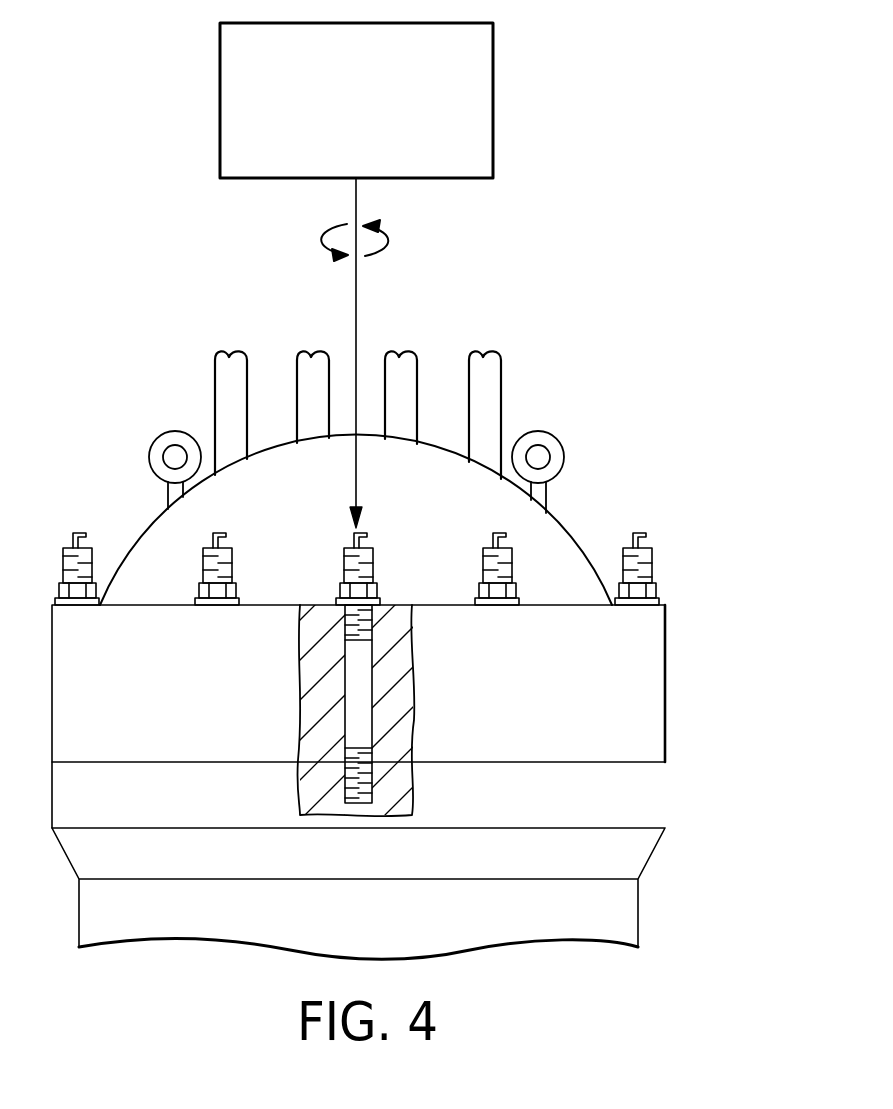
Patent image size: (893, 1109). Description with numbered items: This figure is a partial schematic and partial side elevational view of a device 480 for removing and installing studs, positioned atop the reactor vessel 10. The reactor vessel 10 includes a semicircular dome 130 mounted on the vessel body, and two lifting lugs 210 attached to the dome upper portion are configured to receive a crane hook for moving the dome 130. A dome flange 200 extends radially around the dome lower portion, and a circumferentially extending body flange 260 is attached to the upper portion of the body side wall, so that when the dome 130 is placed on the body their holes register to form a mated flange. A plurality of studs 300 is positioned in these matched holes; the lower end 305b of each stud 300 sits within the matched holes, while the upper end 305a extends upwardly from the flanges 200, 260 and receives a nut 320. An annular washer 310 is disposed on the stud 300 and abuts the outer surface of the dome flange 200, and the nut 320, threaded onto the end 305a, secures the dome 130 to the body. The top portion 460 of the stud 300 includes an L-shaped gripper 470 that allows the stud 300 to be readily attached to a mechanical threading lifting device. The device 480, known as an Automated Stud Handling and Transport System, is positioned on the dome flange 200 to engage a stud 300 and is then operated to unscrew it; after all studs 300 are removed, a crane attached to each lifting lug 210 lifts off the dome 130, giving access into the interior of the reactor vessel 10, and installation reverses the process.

The reactor vessel 10 is at (67, 429).
The semicircular dome 130 is at (565, 530).
The dome flange 200 is at (684, 692).
The lifting lugs 210 is at (552, 432).
The body flange 260 is at (684, 822).
The stud 300 is at (401, 677).
The stud upper end 305a is at (372, 570).
The stud lower end 305b is at (373, 782).
The annular washer 310 is at (659, 598).
The nut 320 is at (655, 583).
The stud top portion 460 is at (329, 551).
The L-shaped gripper 470 is at (367, 540).
The stud removing and installing device 480 is at (493, 97).